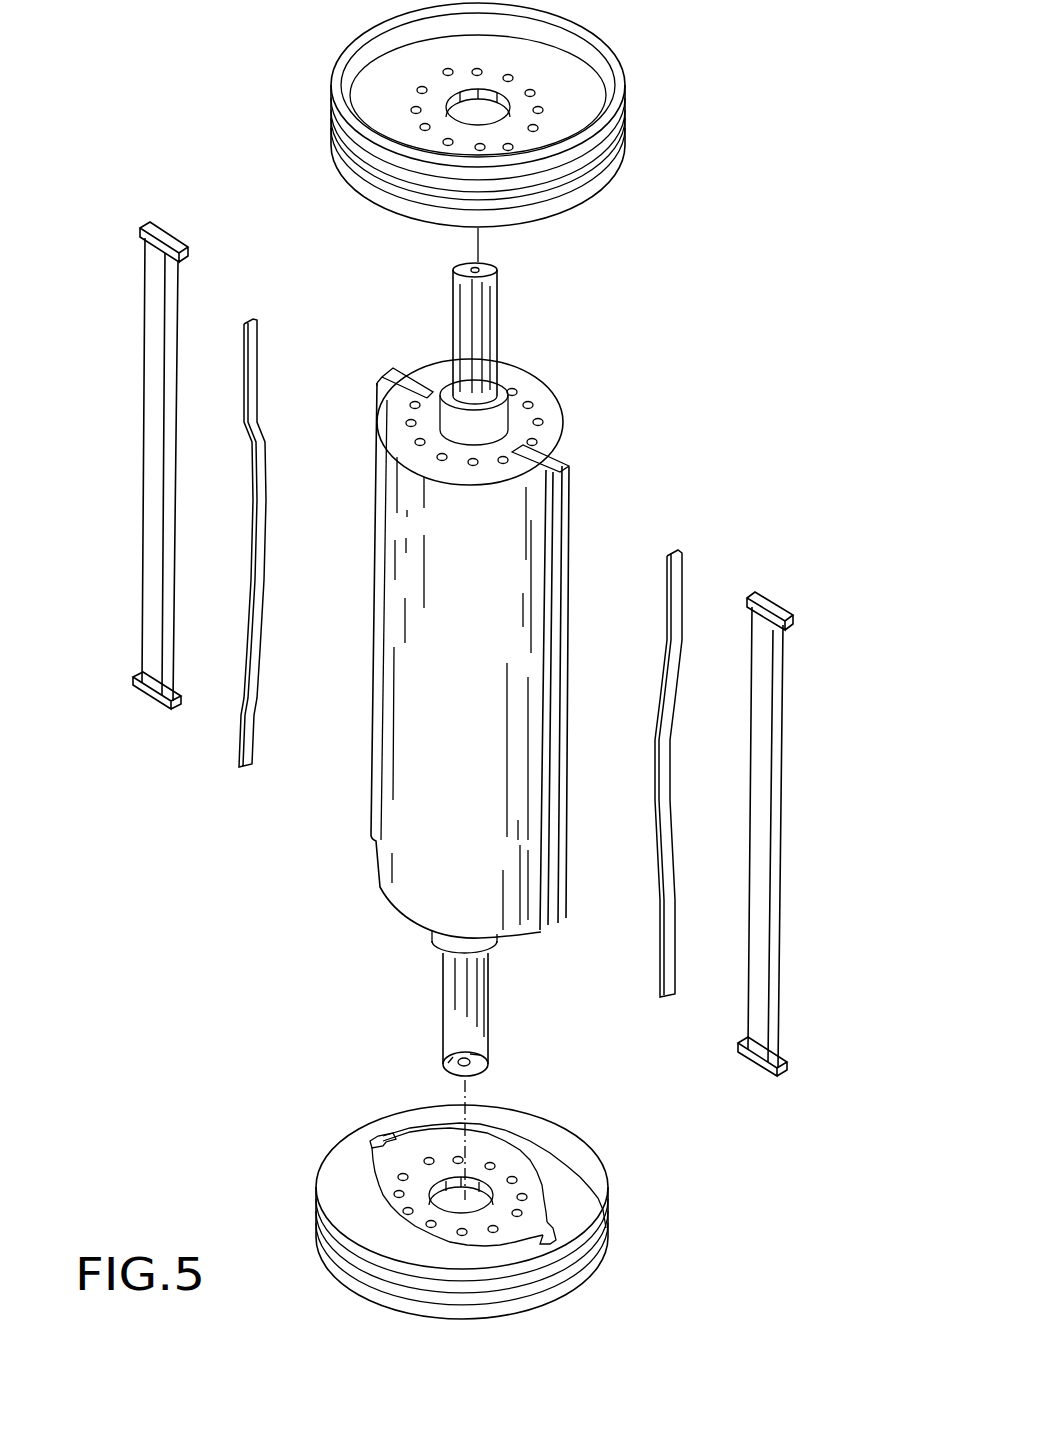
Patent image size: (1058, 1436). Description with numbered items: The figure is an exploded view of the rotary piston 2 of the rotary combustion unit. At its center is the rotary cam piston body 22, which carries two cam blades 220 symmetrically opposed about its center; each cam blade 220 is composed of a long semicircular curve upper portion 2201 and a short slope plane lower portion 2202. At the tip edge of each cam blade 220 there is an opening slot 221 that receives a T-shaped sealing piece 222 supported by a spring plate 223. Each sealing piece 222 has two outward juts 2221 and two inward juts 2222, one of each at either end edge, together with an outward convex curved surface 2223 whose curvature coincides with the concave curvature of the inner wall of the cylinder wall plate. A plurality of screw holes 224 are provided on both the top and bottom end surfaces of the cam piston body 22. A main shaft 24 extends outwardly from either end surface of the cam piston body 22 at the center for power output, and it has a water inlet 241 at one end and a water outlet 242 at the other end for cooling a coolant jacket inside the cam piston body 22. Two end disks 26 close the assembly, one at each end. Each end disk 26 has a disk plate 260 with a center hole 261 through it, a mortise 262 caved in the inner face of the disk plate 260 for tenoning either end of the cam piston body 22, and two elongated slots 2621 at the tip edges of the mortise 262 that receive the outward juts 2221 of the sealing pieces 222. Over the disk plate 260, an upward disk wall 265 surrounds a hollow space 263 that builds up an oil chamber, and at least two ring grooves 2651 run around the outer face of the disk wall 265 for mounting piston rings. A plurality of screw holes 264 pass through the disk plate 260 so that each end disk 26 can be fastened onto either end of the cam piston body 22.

The rotary piston 2 is at (662, 352).
The rotary cam piston body 22 is at (541, 374).
The cam blade 220 is at (524, 474).
The opening slot 221 is at (393, 372).
The long semicircular curve upper portion 2201 is at (447, 502).
The short slope plane lower portion 2202 is at (380, 465).
The T-shaped sealing piece 222 is at (768, 720).
The outward jut 2221 is at (790, 608).
The inward jut 2222 is at (748, 592).
The outward convex curved surface 2223 is at (783, 852).
The spring plate 223 is at (675, 550).
The screw holes 224 is at (410, 423).
The main shaft 24 is at (441, 318).
The water inlet 241 is at (481, 270).
The water outlet 242 is at (465, 1061).
The end disk 26 is at (652, 103).
The disk plate 260 is at (493, 80).
The center hole 261 is at (470, 1182).
The mortise 262 is at (410, 1148).
The elongated slot 2621 is at (380, 1138).
The hollow space 263 is at (410, 72).
The screw holes 264 is at (523, 1204).
The disk wall 265 is at (608, 64).
The ring grooves 2651 is at (553, 197).